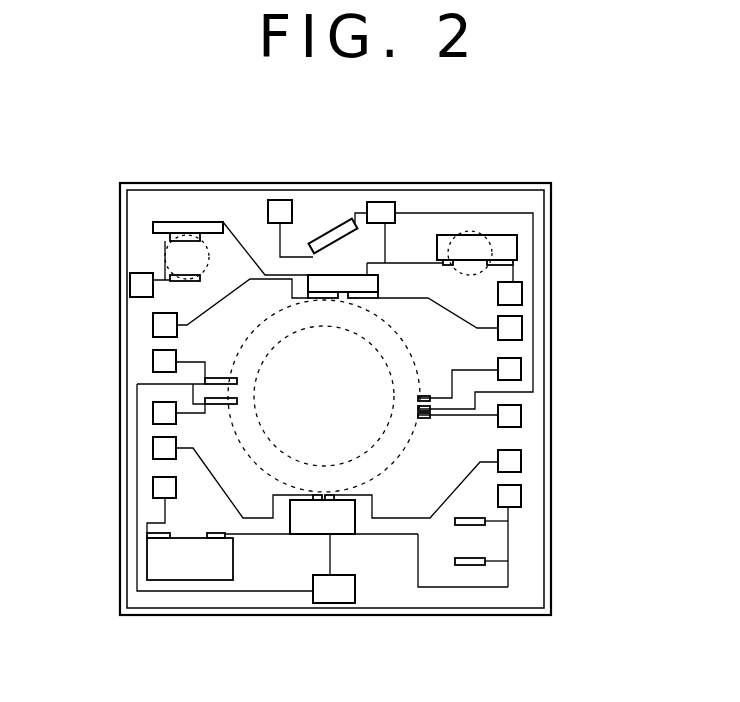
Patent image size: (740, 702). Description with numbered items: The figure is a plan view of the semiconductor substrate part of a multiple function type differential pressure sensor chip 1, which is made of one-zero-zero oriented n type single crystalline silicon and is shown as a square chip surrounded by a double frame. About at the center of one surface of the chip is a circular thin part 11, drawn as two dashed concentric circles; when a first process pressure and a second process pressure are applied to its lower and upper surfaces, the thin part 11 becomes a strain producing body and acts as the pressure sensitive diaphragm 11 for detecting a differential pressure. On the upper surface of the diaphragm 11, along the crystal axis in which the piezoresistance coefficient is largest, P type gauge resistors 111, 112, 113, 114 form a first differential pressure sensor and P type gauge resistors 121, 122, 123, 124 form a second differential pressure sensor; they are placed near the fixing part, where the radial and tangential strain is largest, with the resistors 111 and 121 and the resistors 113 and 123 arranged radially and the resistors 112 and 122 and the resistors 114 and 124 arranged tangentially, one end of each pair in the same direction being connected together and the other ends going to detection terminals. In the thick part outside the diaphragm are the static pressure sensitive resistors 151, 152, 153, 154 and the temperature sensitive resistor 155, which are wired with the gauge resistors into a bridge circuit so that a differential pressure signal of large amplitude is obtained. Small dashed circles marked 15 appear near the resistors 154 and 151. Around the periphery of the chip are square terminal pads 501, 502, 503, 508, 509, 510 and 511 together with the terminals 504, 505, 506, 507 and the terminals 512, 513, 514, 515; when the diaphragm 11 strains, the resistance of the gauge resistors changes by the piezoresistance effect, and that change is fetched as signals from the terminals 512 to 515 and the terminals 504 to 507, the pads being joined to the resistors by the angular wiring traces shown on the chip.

The multiple function type differential pressure sensor chip 1 is at (552, 184).
The circular thin part 11 is at (253, 452).
The bump 15 is at (195, 235).
The P type resistor 111 is at (422, 393).
The P type resistor 112 is at (352, 494).
The P type resistor 113 is at (235, 409).
The P type resistor 114 is at (318, 300).
The P type resistor 121 is at (418, 420).
The P type resistor 122 is at (314, 494).
The P type resistor 123 is at (238, 379).
The P type resistor 124 is at (372, 308).
The static pressure sensitive resistor 151 is at (497, 257).
The static pressure sensitive resistor 152 is at (477, 577).
The static pressure sensitive resistor 153 is at (208, 567).
The static pressure sensitive resistor 154 is at (173, 228).
The temperature sensitive resistor 155 is at (332, 232).
The terminal pad 501 is at (383, 200).
The terminal pad 502 is at (337, 603).
The terminal pad 503 is at (280, 198).
The terminal 504 is at (512, 368).
The terminal 505 is at (512, 460).
The terminal 506 is at (160, 326).
The terminal 507 is at (160, 413).
The terminal pad 508 is at (512, 292).
The terminal pad 509 is at (512, 497).
The terminal pad 510 is at (140, 278).
The terminal pad 511 is at (160, 490).
The terminal 512 is at (512, 416).
The terminal 513 is at (160, 448).
The terminal 514 is at (512, 328).
The terminal 515 is at (160, 361).